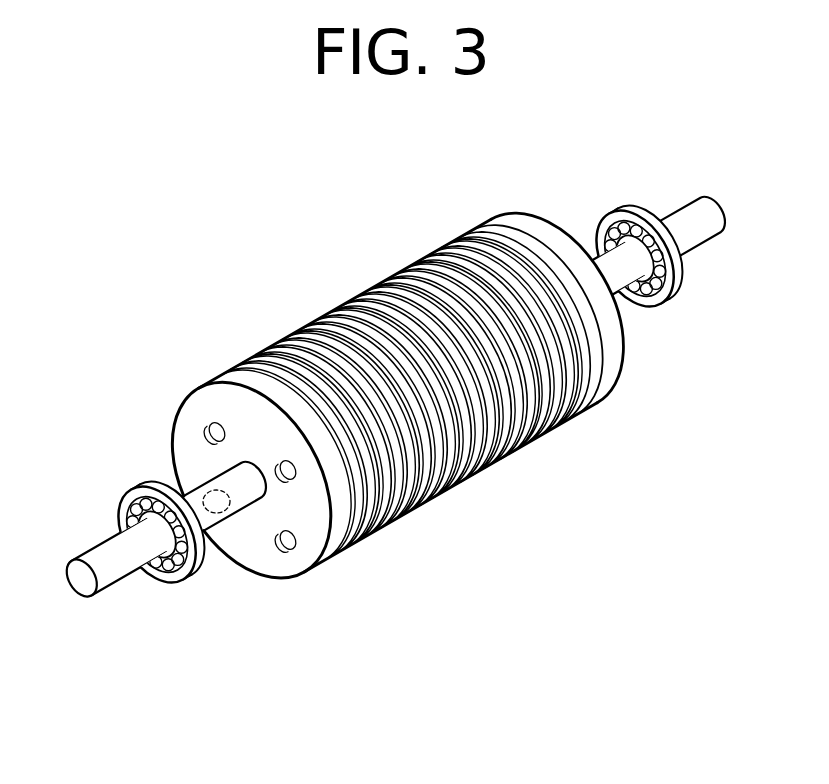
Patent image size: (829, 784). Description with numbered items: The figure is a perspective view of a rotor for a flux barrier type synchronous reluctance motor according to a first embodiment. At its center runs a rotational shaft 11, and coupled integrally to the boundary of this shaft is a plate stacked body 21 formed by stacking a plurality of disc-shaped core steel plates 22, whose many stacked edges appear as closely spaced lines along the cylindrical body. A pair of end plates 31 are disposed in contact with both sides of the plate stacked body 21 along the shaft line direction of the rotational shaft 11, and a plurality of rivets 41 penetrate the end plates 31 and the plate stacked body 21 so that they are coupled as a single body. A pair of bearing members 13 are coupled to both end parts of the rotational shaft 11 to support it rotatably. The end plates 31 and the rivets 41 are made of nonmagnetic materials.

The rotational shaft 11 is at (78, 567).
The bearing members 13 is at (193, 572).
The plate stacked body 21 is at (481, 497).
The core steel plates 22 is at (536, 441).
The end plates 31 is at (293, 572).
The rivets 41 is at (277, 462).